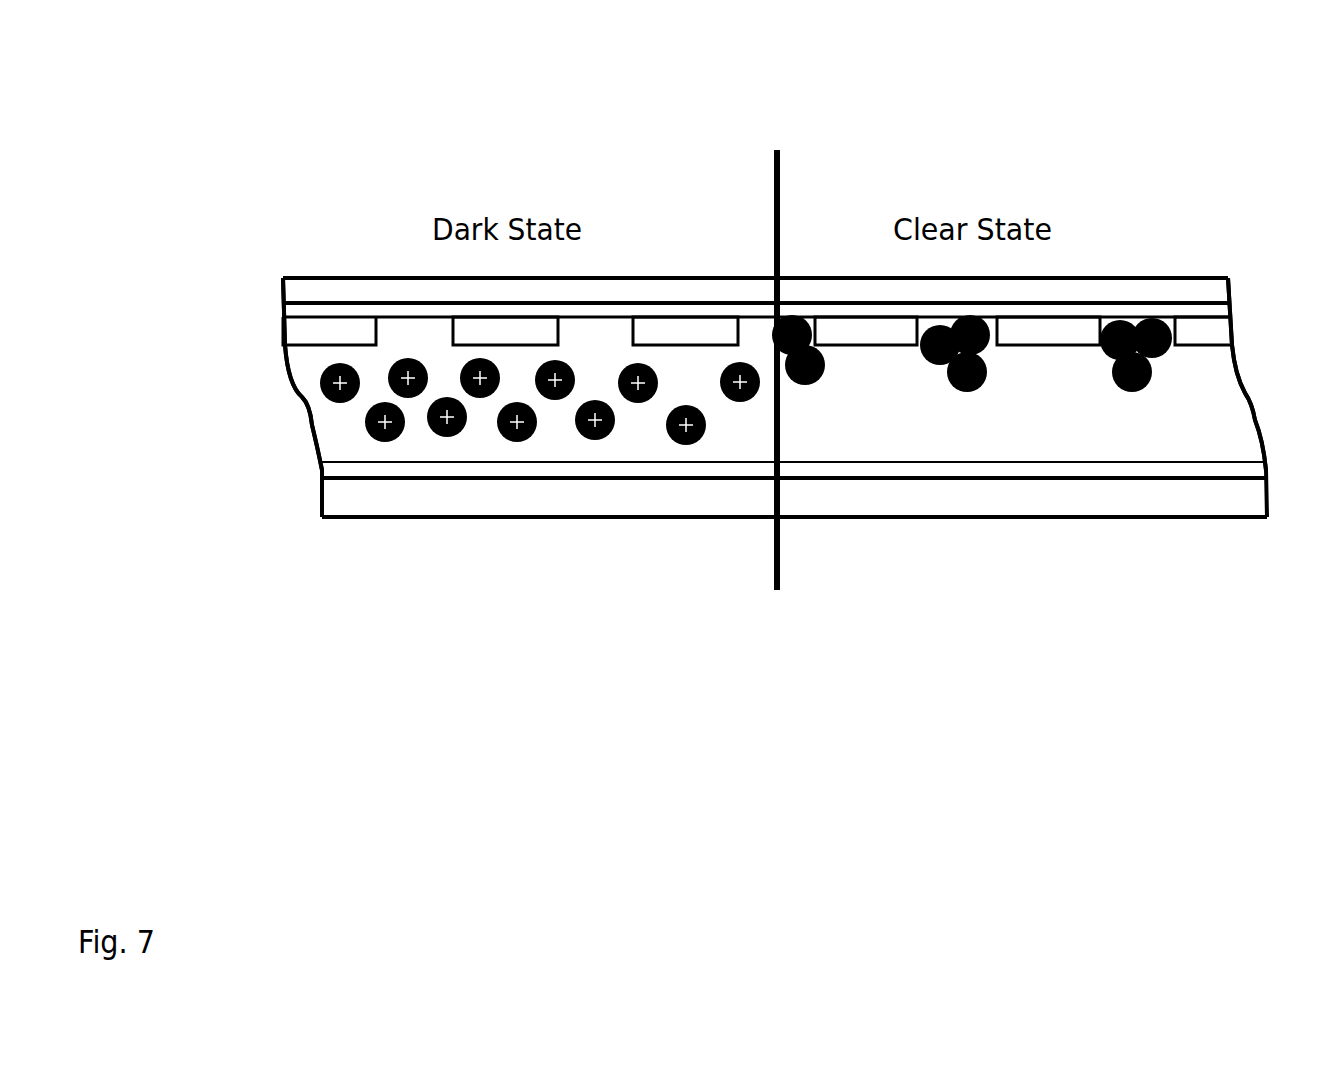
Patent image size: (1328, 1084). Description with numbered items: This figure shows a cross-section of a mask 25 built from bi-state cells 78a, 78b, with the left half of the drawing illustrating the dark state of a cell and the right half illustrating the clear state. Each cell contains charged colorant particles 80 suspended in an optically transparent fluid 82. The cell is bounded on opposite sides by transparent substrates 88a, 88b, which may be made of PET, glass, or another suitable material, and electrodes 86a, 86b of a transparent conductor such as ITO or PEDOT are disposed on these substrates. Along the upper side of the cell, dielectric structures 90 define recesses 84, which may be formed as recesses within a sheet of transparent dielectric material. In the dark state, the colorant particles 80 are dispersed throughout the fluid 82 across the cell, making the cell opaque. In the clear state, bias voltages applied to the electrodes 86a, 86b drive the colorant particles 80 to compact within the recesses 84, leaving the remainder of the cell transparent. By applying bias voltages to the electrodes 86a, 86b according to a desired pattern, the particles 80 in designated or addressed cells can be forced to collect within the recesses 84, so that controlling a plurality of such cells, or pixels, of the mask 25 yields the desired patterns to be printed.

The mask 25 is at (228, 83).
The bi-state cell 78a is at (1228, 360).
The bi-state cell 78b is at (297, 364).
The charged colorant particles 80 is at (385, 436).
The optically transparent fluid 82 is at (1246, 447).
The recesses 84 is at (408, 331).
The electrode 86a is at (286, 318).
The electrode 86b is at (325, 473).
The transparent substrate 88a is at (1220, 291).
The transparent substrate 88b is at (1255, 500).
The dielectric structures 90 is at (1218, 331).